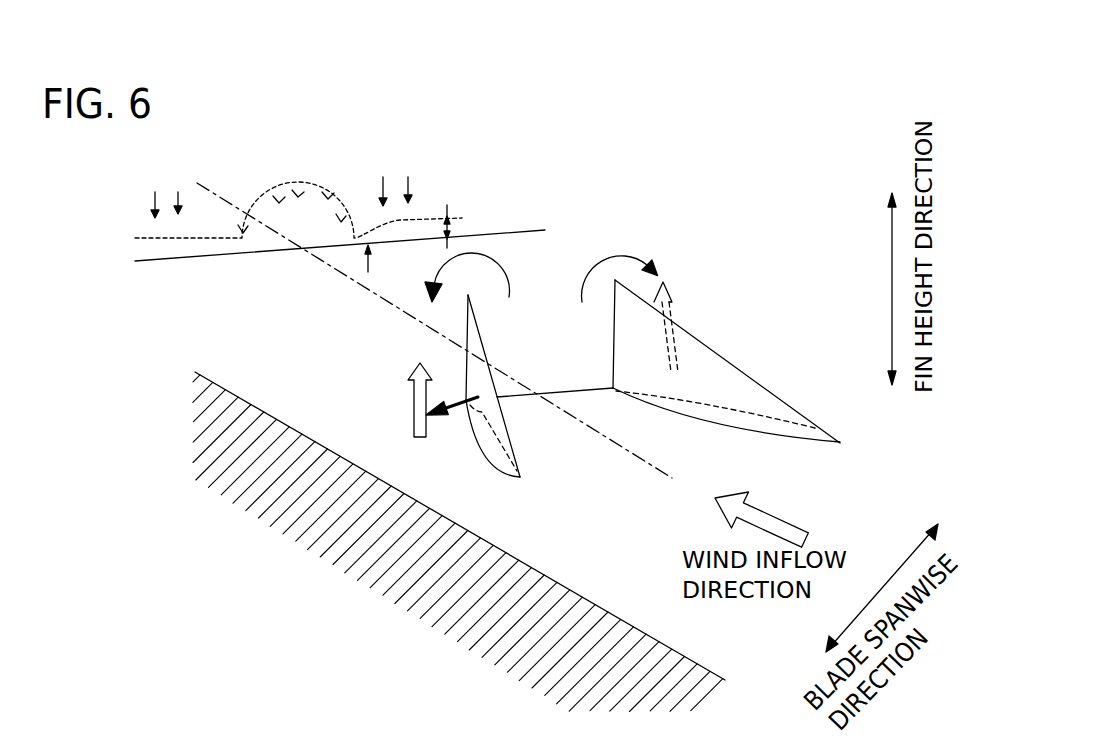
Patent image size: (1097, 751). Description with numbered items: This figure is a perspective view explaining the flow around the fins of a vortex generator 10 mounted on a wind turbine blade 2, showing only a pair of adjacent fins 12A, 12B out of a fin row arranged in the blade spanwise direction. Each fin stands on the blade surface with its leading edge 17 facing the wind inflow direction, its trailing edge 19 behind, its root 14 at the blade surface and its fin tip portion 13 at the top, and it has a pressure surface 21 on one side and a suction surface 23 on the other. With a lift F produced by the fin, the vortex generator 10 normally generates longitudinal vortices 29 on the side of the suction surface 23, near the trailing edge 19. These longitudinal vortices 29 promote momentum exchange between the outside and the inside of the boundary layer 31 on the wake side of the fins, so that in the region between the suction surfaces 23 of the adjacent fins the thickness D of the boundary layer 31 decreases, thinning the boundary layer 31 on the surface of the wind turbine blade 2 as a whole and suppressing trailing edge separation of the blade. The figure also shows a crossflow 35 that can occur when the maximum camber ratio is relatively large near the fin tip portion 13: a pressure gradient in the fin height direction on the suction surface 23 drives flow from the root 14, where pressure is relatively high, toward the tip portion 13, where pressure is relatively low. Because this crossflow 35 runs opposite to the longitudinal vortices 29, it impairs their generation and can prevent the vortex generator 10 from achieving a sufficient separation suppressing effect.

The wind turbine blade 2 is at (612, 597).
The vortex generator 10 is at (799, 213).
The fin 12A is at (613, 350).
The fin 12B is at (478, 320).
The fin tip portion 13 is at (466, 296).
The root of the fin 14 is at (500, 466).
The leading edge 17 is at (524, 477).
The trailing edge 19 is at (613, 386).
The pressure surface 21 is at (497, 400).
The suction surface 23 is at (473, 407).
The longitudinal vortices 29 is at (442, 273).
The boundary layer 31 is at (137, 237).
The crossflow 35 is at (411, 396).
The thickness of the boundary layer D is at (462, 218).
The lift F is at (452, 398).